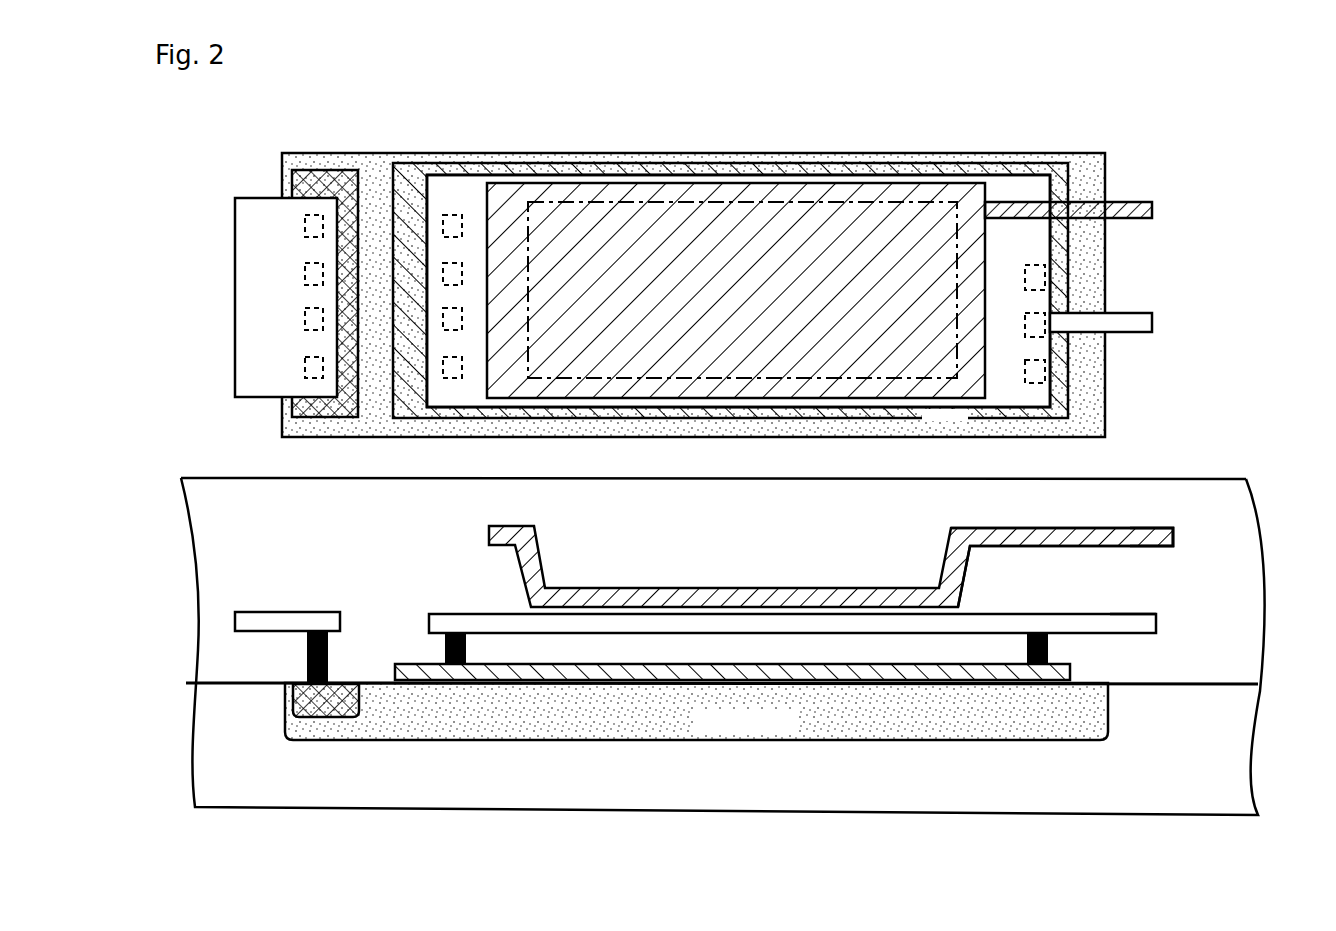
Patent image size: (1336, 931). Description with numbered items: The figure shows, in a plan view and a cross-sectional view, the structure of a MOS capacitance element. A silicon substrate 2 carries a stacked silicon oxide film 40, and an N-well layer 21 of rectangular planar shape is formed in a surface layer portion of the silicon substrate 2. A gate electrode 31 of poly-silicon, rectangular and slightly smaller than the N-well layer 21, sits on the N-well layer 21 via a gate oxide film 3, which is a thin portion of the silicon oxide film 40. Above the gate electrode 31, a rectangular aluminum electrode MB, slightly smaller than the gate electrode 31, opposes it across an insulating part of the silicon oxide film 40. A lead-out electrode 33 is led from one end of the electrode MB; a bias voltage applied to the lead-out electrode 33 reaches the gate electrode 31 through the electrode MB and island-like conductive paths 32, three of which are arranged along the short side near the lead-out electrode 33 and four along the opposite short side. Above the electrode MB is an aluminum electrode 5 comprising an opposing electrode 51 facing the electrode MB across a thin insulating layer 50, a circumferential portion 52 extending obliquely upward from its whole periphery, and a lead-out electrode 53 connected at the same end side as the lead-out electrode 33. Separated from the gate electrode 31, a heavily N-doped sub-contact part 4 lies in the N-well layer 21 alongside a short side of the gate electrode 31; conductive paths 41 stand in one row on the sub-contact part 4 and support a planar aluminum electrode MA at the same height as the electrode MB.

The silicon substrate 2 is at (1248, 781).
The gate oxide film 3 is at (670, 684).
The sub-contact part 4 is at (333, 172).
The electrode 5 is at (906, 360).
The N-well layer 21 is at (1105, 170).
The gate electrode 31 is at (405, 170).
The conductive path 32 is at (452, 215).
The lead-out electrode 33 is at (1124, 614).
The silicon oxide film 40 is at (1260, 638).
The conductive path 41 is at (305, 226).
The thin insulating layer 50 is at (793, 612).
The opposing electrode 51 is at (708, 215).
The circumferential portion 52 is at (1018, 528).
The lead-out electrode 53 is at (1128, 222).
The electrode MA is at (248, 291).
The electrode MB is at (1017, 185).